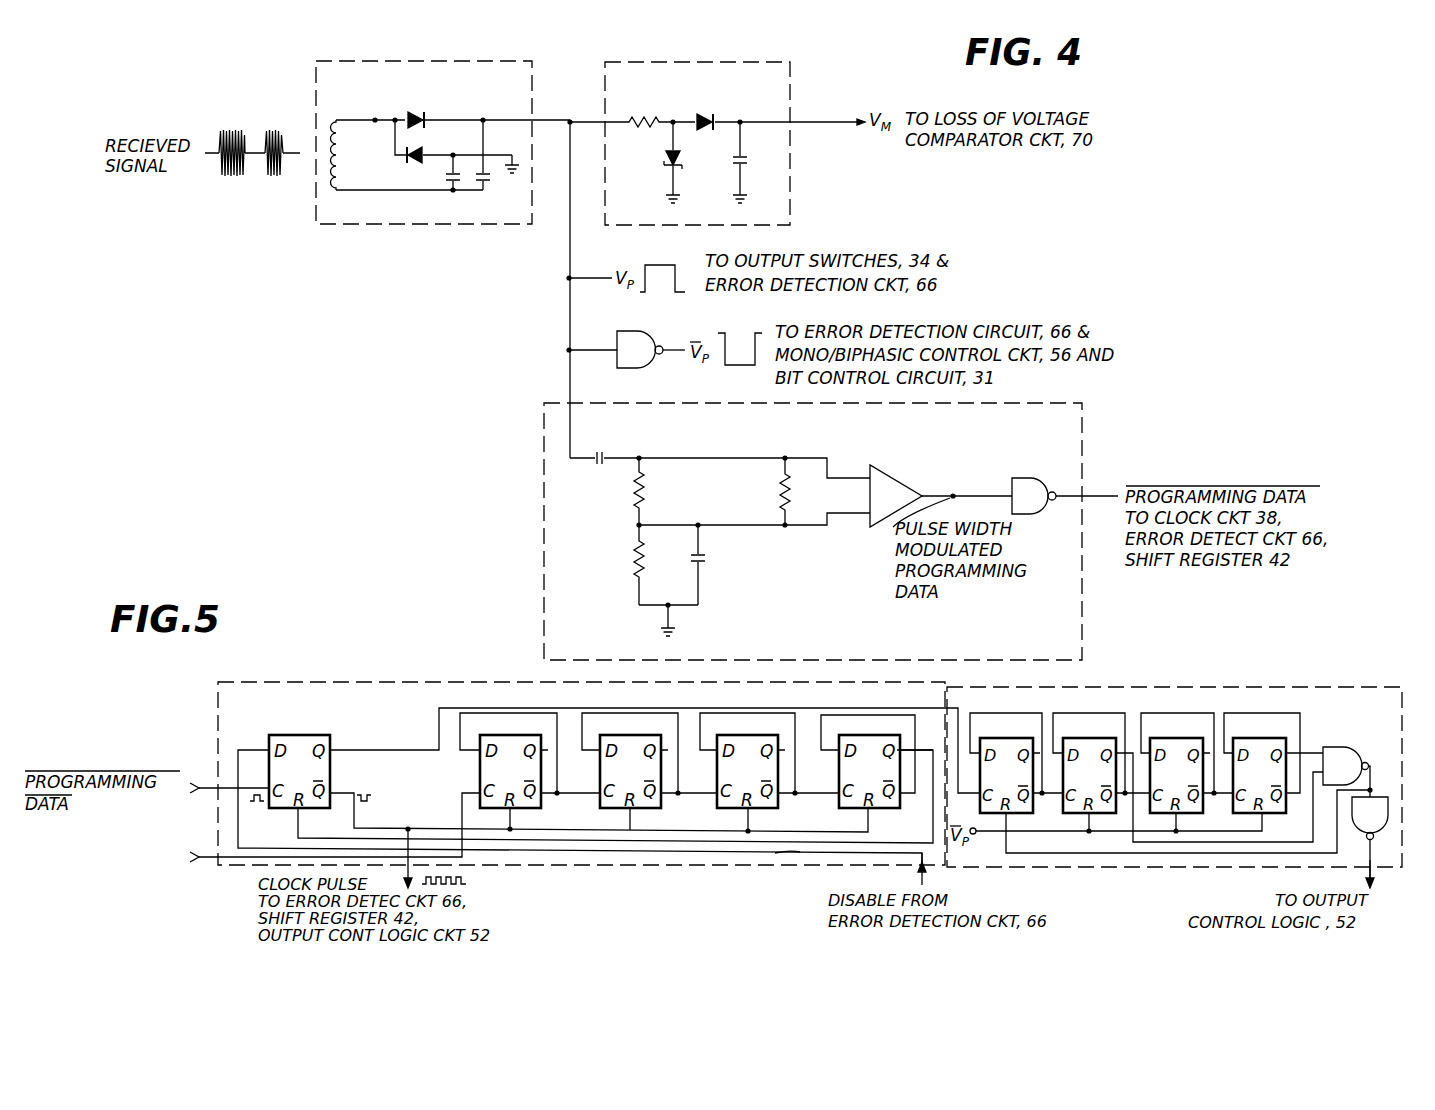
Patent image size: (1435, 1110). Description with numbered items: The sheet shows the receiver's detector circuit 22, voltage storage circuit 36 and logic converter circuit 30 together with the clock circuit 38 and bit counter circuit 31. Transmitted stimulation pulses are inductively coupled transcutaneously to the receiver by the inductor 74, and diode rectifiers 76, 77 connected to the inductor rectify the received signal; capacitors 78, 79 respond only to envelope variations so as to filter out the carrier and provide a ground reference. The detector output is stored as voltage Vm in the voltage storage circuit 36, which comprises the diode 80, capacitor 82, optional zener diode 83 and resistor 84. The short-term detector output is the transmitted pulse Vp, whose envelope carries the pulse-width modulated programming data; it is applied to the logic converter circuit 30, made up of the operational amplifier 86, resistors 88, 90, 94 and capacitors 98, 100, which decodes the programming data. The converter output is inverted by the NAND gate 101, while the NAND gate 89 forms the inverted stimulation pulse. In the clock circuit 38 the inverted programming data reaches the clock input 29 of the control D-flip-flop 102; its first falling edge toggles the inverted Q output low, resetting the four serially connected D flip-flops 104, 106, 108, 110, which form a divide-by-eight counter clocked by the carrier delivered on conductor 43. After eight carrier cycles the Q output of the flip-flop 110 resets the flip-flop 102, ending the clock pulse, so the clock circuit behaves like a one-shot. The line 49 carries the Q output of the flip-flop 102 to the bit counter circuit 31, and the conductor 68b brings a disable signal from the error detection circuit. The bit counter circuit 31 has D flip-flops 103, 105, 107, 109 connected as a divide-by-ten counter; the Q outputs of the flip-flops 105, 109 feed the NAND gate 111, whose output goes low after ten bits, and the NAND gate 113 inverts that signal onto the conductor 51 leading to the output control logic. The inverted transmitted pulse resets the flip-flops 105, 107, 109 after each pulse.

In FIG. 4, the detector circuit 22 is at (468, 61).
In FIG. 4, the voltage storage circuit 36 is at (716, 62).
In FIG. 4, the inductor 74 is at (330, 185).
In FIG. 4, the diode rectifier 76 is at (417, 115).
In FIG. 4, the diode rectifier 77 is at (412, 162).
In FIG. 4, the capacitor 78 is at (452, 186).
In FIG. 4, the capacitor 79 is at (486, 186).
In FIG. 4, the diode 80 is at (711, 116).
In FIG. 4, the capacitor 82 is at (746, 160).
In FIG. 4, the zener diode 83 is at (664, 160).
In FIG. 4, the resistor 84 is at (625, 120).
In FIG. 4, the operational amplifier 86 is at (897, 492).
In FIG. 4, the resistor 88 is at (630, 496).
In FIG. 4, the NAND gate 89 is at (620, 334).
In FIG. 4, the resistor 90 is at (630, 562).
In FIG. 4, the resistor 94 is at (778, 494).
In FIG. 4, the capacitor 98 is at (598, 468).
In FIG. 4, the capacitor 100 is at (705, 566).
In FIG. 4, the NAND gate 101 is at (1022, 478).
In FIG. 4, the logic converter circuit 30 is at (1083, 437).
In FIG. 5, the clock circuit 38 is at (375, 682).
In FIG. 5, the bit counter circuit 31 is at (1257, 687).
In FIG. 5, the clock input 29 is at (262, 786).
In FIG. 5, the conductor 43 is at (210, 864).
In FIG. 5, the clock output line 49 is at (423, 752).
In FIG. 5, the control D-flip-flop 102 is at (318, 733).
In FIG. 5, the D flip-flop 104 is at (494, 721).
In FIG. 5, the D flip-flop 106 is at (614, 721).
In FIG. 5, the D flip-flop 108 is at (732, 721).
In FIG. 5, the D flip-flop 110 is at (865, 721).
In FIG. 5, the disable input line 68b is at (798, 852).
In FIG. 5, the D flip-flop 103 is at (994, 724).
In FIG. 5, the D flip-flop 105 is at (1077, 724).
In FIG. 5, the D flip-flop 107 is at (1167, 724).
In FIG. 5, the D flip-flop 109 is at (1250, 724).
In FIG. 5, the NAND gate 111 is at (1352, 777).
In FIG. 5, the NAND gate 113 is at (1384, 827).
In FIG. 5, the conductor 51 is at (1355, 865).